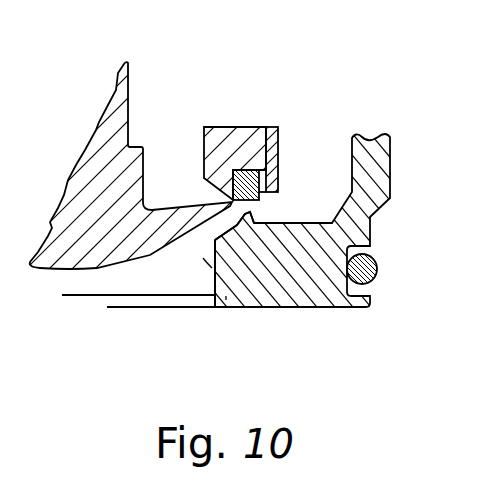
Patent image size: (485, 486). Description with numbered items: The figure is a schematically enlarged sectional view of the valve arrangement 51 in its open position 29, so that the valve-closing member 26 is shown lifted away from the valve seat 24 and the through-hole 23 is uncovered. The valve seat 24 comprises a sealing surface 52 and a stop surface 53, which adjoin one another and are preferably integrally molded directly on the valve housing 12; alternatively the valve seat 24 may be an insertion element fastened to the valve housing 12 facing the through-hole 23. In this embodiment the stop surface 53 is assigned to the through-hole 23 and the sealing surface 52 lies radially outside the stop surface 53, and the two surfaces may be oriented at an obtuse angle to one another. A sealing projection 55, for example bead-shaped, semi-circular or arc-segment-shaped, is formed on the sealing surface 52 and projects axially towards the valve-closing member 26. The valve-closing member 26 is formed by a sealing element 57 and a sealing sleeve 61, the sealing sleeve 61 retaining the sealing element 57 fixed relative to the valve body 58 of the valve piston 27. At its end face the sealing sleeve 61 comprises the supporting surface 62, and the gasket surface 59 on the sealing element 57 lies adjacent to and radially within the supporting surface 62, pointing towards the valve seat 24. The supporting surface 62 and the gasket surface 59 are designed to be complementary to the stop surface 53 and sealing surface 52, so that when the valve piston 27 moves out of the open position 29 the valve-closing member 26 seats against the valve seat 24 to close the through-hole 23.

The valve housing 12 is at (242, 243).
The through-hole 23 is at (226, 300).
The valve seat 24 is at (222, 235).
The valve-closing member 26 is at (122, 286).
The valve piston 27 is at (146, 84).
The open position 29 is at (175, 287).
The valve arrangement 51 is at (343, 108).
The sealing surface 52 is at (290, 222).
The stop surface 53 is at (222, 243).
The sealing projection 55 is at (256, 213).
The sealing element 57 is at (250, 163).
The valve body 58 is at (92, 213).
The gasket surface 59 is at (236, 252).
The sealing sleeve 61 is at (272, 130).
The supporting surface 62 is at (192, 243).